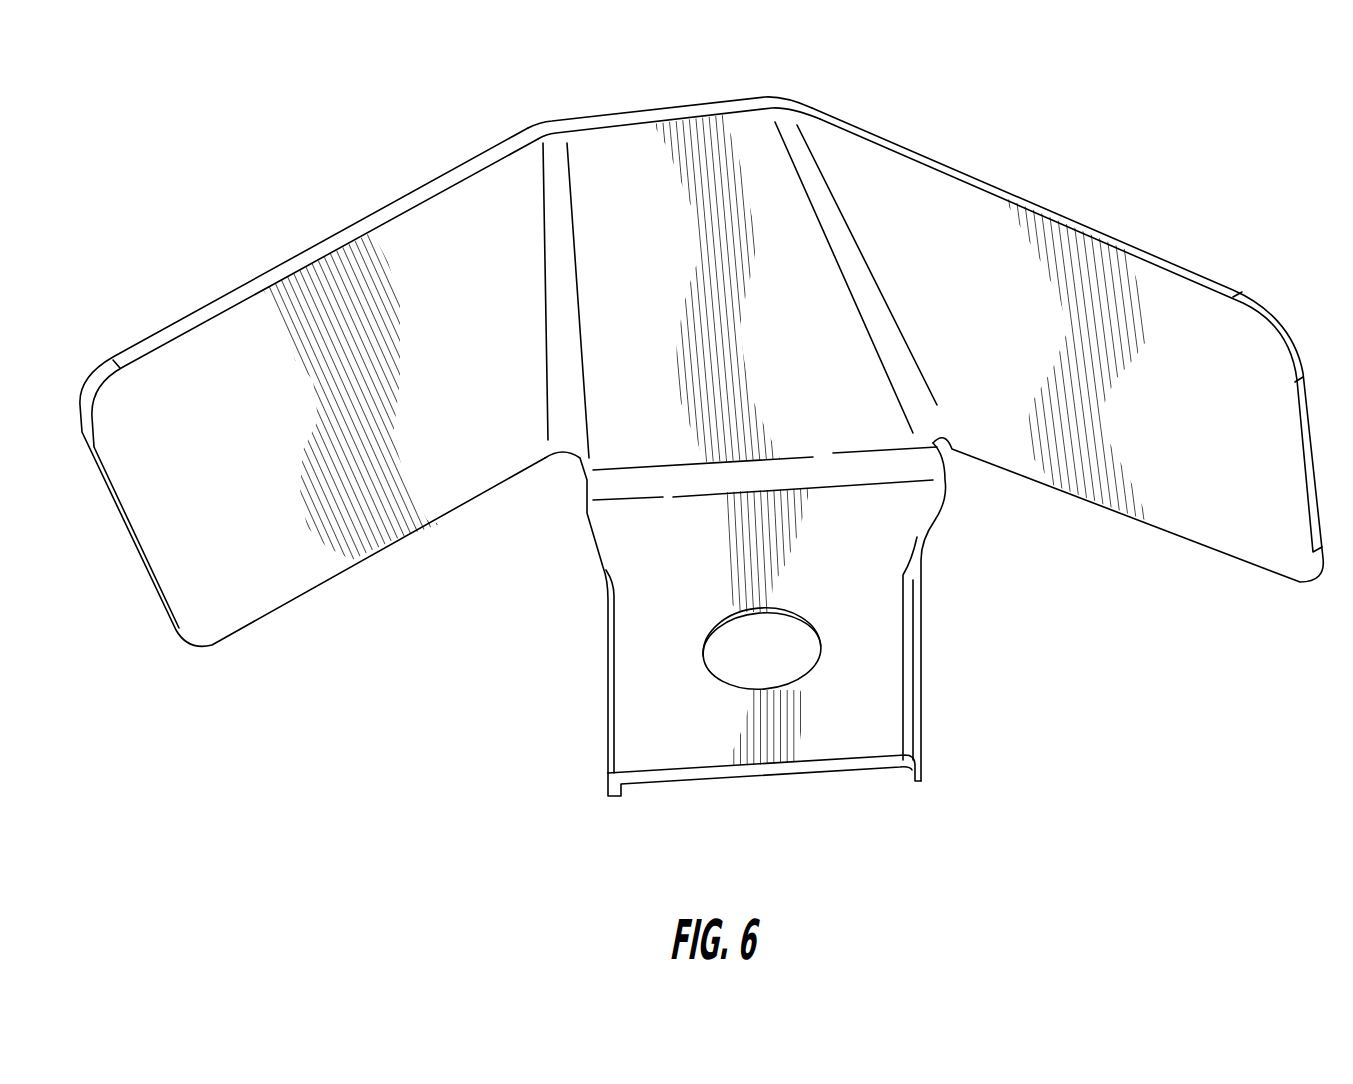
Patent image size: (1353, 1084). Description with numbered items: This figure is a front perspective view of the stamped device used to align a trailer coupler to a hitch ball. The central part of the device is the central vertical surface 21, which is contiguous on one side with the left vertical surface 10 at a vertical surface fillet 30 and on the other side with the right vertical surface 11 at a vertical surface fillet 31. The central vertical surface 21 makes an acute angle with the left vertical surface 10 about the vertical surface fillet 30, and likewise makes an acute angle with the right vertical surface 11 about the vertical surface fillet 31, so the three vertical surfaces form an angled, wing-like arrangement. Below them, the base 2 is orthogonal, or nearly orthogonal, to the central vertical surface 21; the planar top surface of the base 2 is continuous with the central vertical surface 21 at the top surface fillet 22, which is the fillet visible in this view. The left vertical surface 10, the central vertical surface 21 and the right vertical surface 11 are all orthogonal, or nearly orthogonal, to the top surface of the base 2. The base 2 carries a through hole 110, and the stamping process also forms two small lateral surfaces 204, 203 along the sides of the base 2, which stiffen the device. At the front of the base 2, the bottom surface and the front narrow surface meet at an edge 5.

The base 2 is at (764, 650).
The edge 5 is at (832, 768).
The left vertical surface 10 is at (407, 293).
The right vertical surface 11 is at (1043, 290).
The central vertical surface 21 is at (652, 200).
The top surface fillet 22 is at (640, 483).
The vertical surface fillet 30 is at (560, 192).
The vertical surface fillet 31 is at (803, 165).
The through hole 110 is at (770, 663).
The lateral surface 203 is at (920, 692).
The lateral surface 204 is at (607, 712).